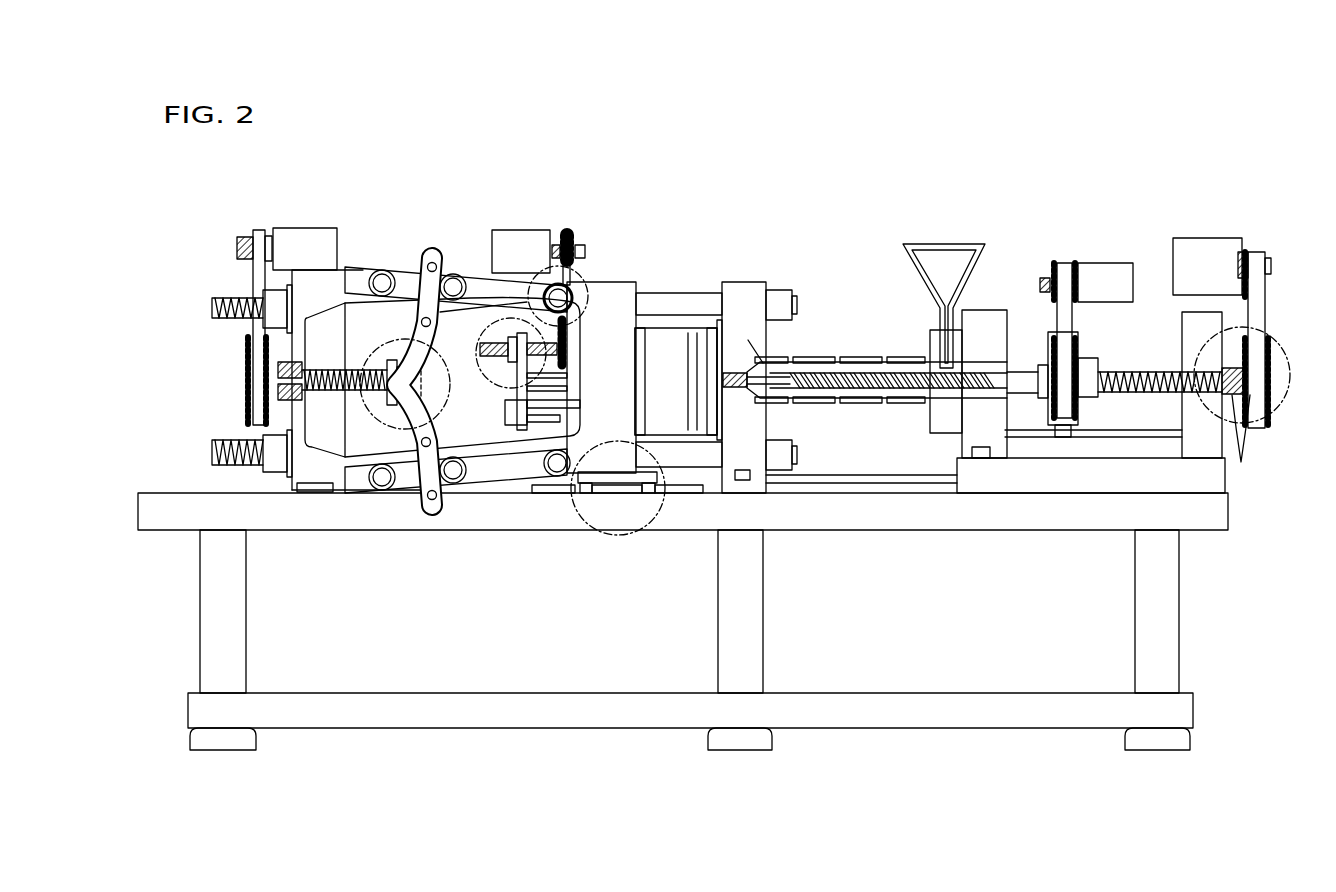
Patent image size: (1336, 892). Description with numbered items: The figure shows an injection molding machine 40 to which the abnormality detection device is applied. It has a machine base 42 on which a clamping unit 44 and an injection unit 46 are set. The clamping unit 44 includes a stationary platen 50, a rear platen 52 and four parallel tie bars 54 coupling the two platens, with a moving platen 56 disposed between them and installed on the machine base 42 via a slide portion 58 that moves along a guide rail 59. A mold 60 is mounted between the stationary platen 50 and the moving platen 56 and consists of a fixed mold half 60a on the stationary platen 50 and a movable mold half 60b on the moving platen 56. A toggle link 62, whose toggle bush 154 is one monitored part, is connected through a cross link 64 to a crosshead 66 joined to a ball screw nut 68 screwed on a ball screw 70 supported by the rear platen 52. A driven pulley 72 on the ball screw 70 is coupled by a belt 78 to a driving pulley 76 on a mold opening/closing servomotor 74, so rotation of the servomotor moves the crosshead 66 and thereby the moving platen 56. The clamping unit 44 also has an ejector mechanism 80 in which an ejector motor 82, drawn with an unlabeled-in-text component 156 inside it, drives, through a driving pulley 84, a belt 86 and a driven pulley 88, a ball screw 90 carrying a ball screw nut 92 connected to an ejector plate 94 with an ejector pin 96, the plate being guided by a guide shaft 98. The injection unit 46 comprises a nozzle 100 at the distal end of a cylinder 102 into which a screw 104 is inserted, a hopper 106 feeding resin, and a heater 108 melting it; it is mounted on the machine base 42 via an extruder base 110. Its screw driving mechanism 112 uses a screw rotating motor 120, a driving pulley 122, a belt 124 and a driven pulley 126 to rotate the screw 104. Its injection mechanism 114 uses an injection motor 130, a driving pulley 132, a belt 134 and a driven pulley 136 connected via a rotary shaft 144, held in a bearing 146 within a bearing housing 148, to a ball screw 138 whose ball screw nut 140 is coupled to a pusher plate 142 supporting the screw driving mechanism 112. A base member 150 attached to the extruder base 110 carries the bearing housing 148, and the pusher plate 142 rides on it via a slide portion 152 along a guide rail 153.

The injection molding machine 40 is at (711, 175).
The machine base 42 is at (923, 531).
The clamping unit 44 is at (437, 354).
The injection unit 46 is at (1123, 212).
The stationary platen 50 is at (748, 282).
The rear platen 52 is at (346, 280).
The tie bars 54 is at (684, 294).
The moving platen 56 is at (636, 285).
The slide portion 58 is at (586, 494).
The guide rail 59 is at (682, 494).
The mold 60 is at (811, 335).
The fixed mold half 60a is at (780, 350).
The movable mold half 60b is at (790, 304).
The toggle link 62 is at (485, 480).
The cross link 64 is at (420, 495).
The crosshead 66 is at (417, 412).
The ball screw nut 68 is at (386, 405).
The ball screw 70 is at (326, 395).
The driven pulley 72 is at (245, 358).
The mold opening/closing servomotor 74 is at (290, 236).
The driving pulley 76 is at (237, 246).
The belt 78 is at (253, 290).
The ejector mechanism 80 is at (535, 228).
The ejector motor 82 is at (500, 240).
The driving pulley 84 is at (580, 240).
The belt 86 is at (573, 288).
The driven pulley 88 is at (568, 340).
The ball screw 90 is at (520, 336).
The ball screw nut 92 is at (492, 353).
The ejector plate 94 is at (580, 406).
The ejector pin 96 is at (575, 376).
The guide shaft 98 is at (562, 430).
The nozzle 100 is at (755, 398).
The cylinder 102 is at (873, 400).
The screw 104 is at (888, 362).
The hopper 106 is at (978, 262).
The heater 108 is at (812, 404).
The extruder base 110 is at (1212, 495).
The screw driving mechanism 112 is at (1067, 258).
The injection mechanism 114 is at (1240, 228).
The screw rotating motor 120 is at (1098, 272).
The driving pulley 122 is at (1044, 290).
The belt 124 is at (1065, 318).
The driven pulley 126 is at (1080, 352).
The injection motor 130 is at (1196, 238).
The driving pulley 132 is at (1265, 258).
The belt 134 is at (1262, 306).
The driven pulley 136 is at (1262, 383).
The ball screw 138 is at (1115, 390).
The ball screw nut 140 is at (1100, 398).
The pusher plate 142 is at (1045, 410).
The rotary shaft 144 is at (1215, 345).
The bearing 146 is at (1254, 436).
The bearing housing 148 is at (1250, 350).
The base member 150 is at (1172, 470).
The slide portion 152 is at (1062, 438).
The guide rail 153 is at (1152, 438).
The toggle bush 154 is at (547, 260).
The motor body 156 is at (525, 254).